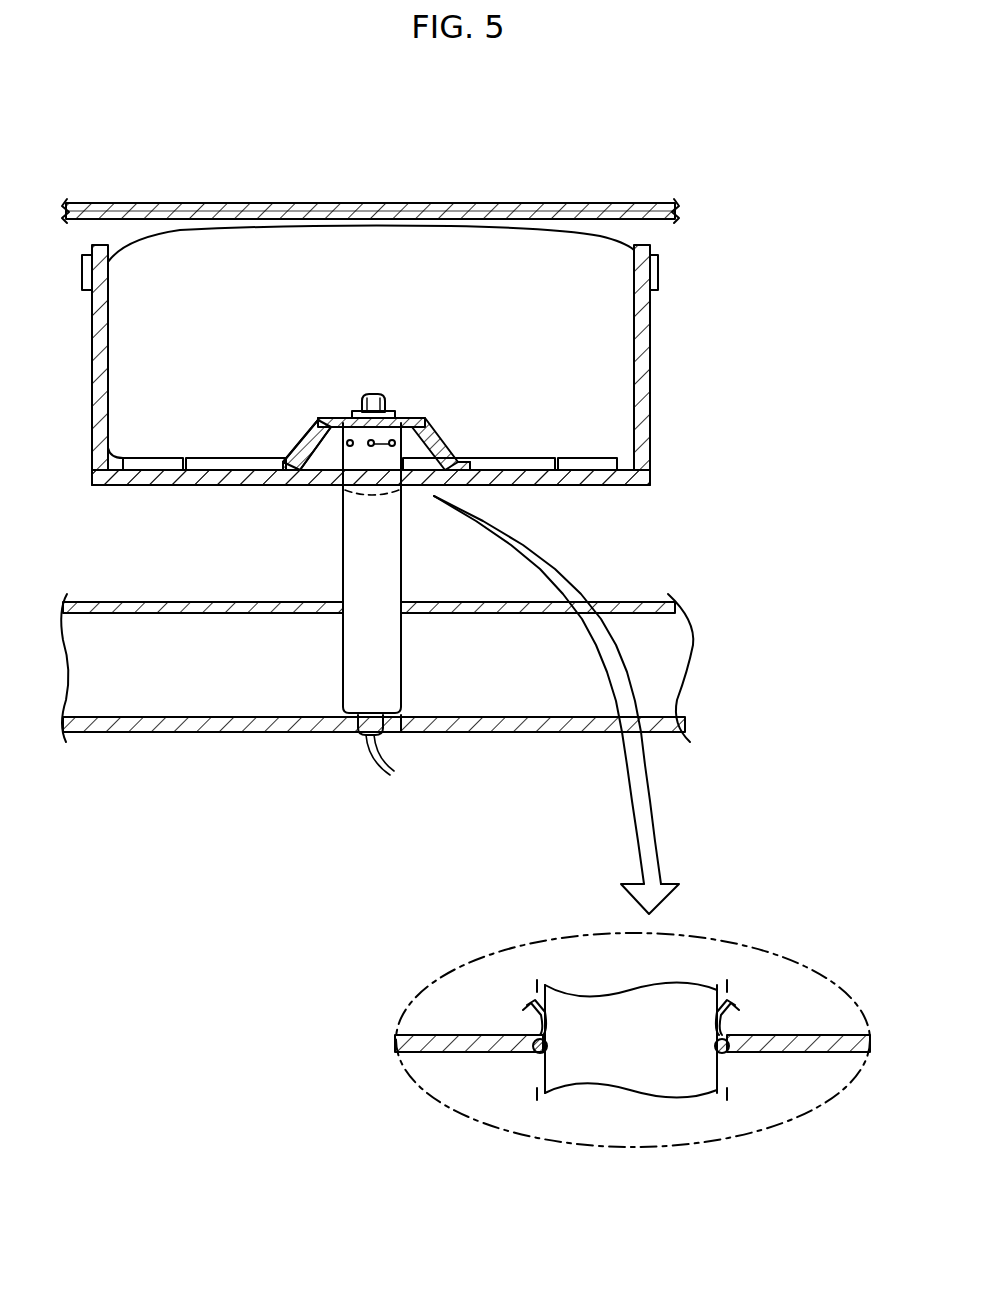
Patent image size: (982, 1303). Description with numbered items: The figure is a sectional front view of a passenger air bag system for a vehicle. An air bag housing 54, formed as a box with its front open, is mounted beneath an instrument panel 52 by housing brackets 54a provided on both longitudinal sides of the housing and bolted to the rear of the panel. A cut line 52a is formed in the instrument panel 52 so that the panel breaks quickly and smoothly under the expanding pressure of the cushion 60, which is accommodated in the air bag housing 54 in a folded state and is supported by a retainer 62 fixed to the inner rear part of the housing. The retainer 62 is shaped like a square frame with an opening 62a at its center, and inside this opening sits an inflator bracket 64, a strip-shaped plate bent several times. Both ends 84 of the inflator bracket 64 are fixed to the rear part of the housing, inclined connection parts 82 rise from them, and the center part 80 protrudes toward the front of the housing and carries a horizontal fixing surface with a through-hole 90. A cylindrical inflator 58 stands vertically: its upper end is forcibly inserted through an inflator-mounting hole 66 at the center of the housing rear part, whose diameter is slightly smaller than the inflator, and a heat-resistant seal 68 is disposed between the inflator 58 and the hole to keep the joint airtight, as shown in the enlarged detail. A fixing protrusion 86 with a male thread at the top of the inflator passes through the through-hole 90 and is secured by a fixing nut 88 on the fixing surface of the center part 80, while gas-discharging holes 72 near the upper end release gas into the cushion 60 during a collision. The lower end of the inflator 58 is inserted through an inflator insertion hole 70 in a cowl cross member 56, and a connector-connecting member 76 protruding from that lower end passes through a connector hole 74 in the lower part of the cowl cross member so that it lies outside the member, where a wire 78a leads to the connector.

The instrument panel 52 is at (98, 204).
The cut line 52a is at (258, 204).
The air bag housing 54 is at (651, 322).
The housing brackets 54a is at (659, 270).
The cowl cross member 56 is at (595, 601).
The inflator 58 is at (360, 555).
The cushion 60 is at (595, 388).
The retainer 62 is at (628, 460).
The opening 62a is at (535, 470).
The inflator bracket 64 is at (517, 388).
The inflator-mounting hole 66 is at (735, 1003).
The seal 68 is at (535, 1052).
The inflator insertion hole 70 is at (402, 601).
The gas-discharging holes 72 is at (330, 440).
The connector hole 74 is at (392, 727).
The connector-connecting member 76 is at (365, 735).
The wire 78a is at (390, 772).
The center part 80 is at (410, 418).
The inclined connection parts 82 is at (432, 440).
The ends 84 is at (483, 462).
The fixing protrusion 86 is at (372, 394).
The fixing nut 88 is at (387, 416).
The through-hole 90 is at (360, 430).